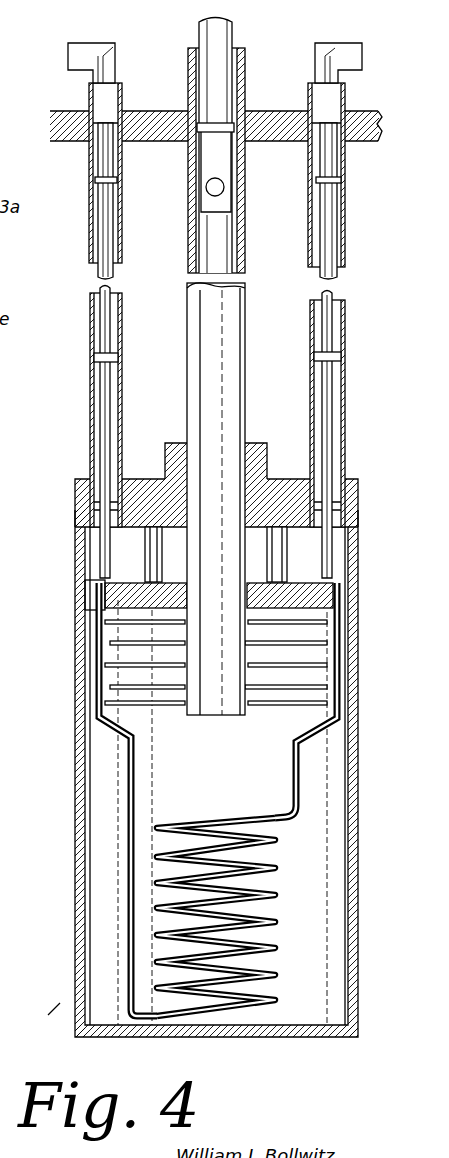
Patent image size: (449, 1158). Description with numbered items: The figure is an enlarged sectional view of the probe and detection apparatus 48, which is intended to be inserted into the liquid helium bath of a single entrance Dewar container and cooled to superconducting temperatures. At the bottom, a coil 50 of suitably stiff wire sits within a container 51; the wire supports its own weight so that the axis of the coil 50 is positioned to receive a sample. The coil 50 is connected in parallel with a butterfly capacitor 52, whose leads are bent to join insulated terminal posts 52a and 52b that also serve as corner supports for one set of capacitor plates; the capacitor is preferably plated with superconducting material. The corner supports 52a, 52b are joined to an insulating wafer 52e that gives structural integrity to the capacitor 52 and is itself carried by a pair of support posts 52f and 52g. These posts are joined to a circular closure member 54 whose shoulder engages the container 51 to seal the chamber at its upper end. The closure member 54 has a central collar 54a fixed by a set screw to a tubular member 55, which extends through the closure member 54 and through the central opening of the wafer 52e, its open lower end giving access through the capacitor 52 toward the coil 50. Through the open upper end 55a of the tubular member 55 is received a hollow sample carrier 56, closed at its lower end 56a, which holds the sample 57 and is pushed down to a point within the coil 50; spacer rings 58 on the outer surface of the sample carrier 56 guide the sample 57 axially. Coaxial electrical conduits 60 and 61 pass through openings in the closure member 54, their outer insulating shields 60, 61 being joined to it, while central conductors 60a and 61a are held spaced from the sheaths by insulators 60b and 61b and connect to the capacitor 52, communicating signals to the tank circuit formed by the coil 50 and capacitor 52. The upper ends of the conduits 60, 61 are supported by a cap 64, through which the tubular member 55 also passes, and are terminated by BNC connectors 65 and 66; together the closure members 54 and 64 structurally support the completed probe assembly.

The probe and detection apparatus 48 is at (62, 1001).
The coil 50 is at (275, 975).
The container 51 is at (75, 943).
The butterfly capacitor 52 is at (163, 712).
The terminal post 52a is at (340, 693).
The terminal post 52b is at (95, 667).
The insulating wafer 52e is at (103, 595).
The support post 52f is at (285, 557).
The support post 52g is at (147, 552).
The closure member 54 is at (77, 480).
The central collar 54a is at (157, 443).
The tubular member 55 is at (247, 388).
The open upper end 55a is at (243, 48).
The sample carrier 56 is at (200, 22).
The closed lower end 56a is at (217, 215).
The sample 57 is at (218, 182).
The spacer ring 58 is at (207, 125).
The electrical conduit 60 is at (90, 398).
The central conductor 60a is at (103, 332).
The insulator 60b is at (97, 357).
The electrical conduit 61 is at (345, 402).
The central conductor 61a is at (328, 330).
The insulator 61b is at (337, 357).
The closure member 64 is at (153, 142).
The BNC connector 65 is at (103, 62).
The BNC connector 66 is at (337, 48).